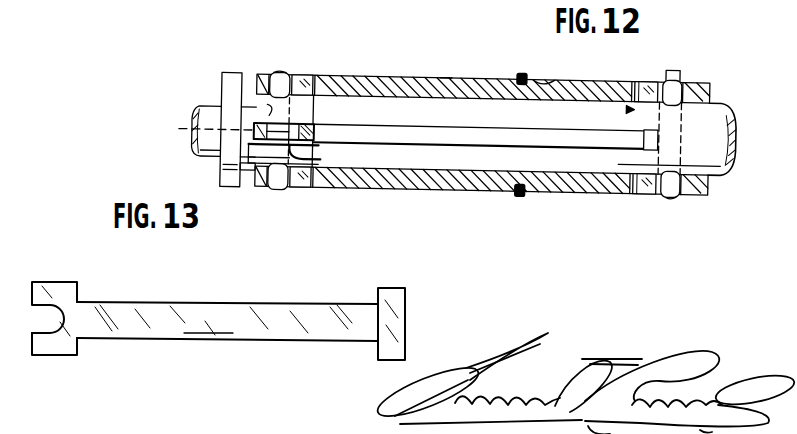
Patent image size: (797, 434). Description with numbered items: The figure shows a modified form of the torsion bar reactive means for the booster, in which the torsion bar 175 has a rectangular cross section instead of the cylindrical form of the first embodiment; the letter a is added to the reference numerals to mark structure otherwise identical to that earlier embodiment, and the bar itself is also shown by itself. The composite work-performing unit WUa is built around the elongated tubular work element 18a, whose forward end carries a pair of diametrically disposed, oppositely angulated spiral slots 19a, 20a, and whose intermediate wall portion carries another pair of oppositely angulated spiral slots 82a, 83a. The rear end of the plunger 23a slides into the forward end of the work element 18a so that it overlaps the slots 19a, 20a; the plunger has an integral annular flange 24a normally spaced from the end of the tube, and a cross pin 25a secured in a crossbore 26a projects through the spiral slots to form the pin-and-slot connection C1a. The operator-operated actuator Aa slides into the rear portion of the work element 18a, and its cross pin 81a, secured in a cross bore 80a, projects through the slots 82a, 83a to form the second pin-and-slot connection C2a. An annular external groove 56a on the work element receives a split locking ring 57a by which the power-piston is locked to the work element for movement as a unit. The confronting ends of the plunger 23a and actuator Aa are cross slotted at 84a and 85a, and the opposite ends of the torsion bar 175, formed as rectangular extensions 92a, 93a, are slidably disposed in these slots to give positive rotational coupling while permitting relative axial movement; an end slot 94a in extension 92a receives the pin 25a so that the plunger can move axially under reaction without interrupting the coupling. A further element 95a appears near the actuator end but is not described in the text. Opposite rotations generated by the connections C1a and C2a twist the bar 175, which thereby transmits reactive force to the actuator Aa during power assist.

In FIG. 12, the tubular work element 18a is at (362, 76).
In FIG. 12, the spiral slot 19a is at (306, 75).
In FIG. 12, the spiral slot 20a is at (306, 186).
In FIG. 12, the plunger 23a is at (250, 110).
In FIG. 12, the annular flange 24a is at (250, 42).
In FIG. 12, the cross pin 25a is at (322, 158).
In FIG. 12, the crossbore 26a is at (197, 130).
In FIG. 12, the split locking ring 57a is at (522, 68).
In FIG. 12, the annular external groove 56a is at (545, 71).
In FIG. 12, the cross bore 80a is at (678, 116).
In FIG. 12, the cross pin 81a is at (670, 87).
In FIG. 12, the spiral slot 82a is at (643, 74).
In FIG. 12, the spiral slot 83a is at (680, 189).
In FIG. 12, the cross slot 84a is at (265, 143).
In FIG. 12, the cross slot 85a is at (654, 136).
In FIG. 12, the rectangular extension 92a is at (318, 141).
In FIG. 13, the rectangular extension 92a is at (50, 296).
In FIG. 12, the rectangular extension 93a is at (645, 128).
In FIG. 13, the rectangular extension 93a is at (393, 305).
In FIG. 12, the end slot 94a is at (310, 140).
In FIG. 13, the end slot 94a is at (39, 317).
In FIG. 12, the pin 95a is at (676, 62).
In FIG. 12, the torsion bar 175 is at (451, 169).
In FIG. 13, the torsion bar 175 is at (227, 321).
In FIG. 12, the work-performing unit WUa is at (452, 46).
In FIG. 12, the pin-and-slot connection C1a is at (285, 70).
In FIG. 12, the pin-and-slot connection C2a is at (686, 190).
In FIG. 12, the actuator Aa is at (630, 102).